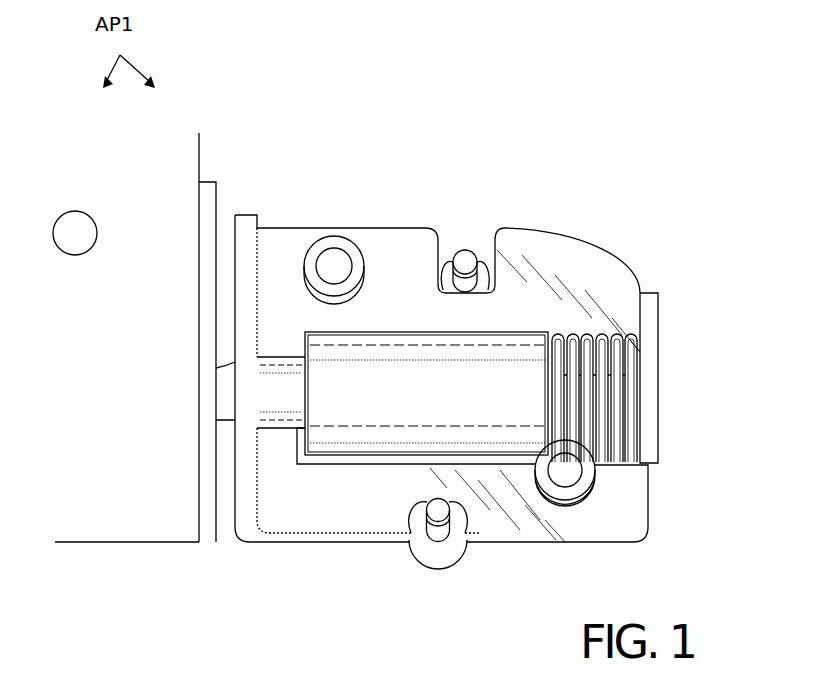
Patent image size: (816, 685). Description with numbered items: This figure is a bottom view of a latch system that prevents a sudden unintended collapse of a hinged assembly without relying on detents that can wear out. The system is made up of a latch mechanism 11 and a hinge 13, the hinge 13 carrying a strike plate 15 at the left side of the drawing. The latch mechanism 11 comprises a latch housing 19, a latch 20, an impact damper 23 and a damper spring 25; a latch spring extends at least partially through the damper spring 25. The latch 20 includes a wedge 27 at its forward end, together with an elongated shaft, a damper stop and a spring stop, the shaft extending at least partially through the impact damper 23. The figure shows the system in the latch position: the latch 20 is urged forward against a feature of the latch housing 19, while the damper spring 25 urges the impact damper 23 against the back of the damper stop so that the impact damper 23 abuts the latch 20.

The latch mechanism 11 is at (572, 174).
The hinge 13 is at (139, 402).
The strike plate 15 is at (213, 178).
The latch housing 19 is at (537, 311).
The latch 20 is at (291, 395).
The impact damper 23 is at (427, 395).
The damper spring 25 is at (600, 470).
The wedge 27 is at (233, 422).